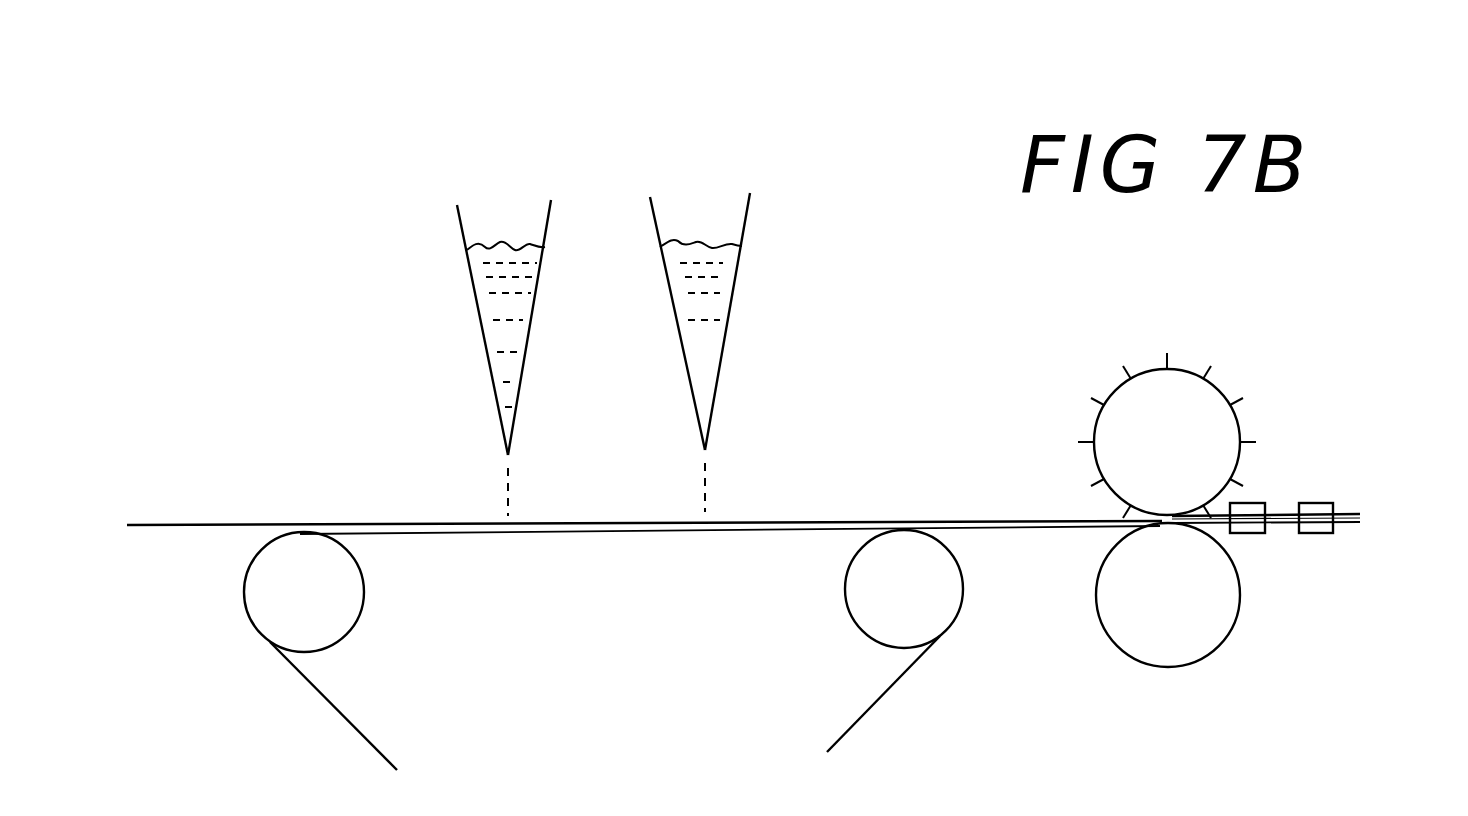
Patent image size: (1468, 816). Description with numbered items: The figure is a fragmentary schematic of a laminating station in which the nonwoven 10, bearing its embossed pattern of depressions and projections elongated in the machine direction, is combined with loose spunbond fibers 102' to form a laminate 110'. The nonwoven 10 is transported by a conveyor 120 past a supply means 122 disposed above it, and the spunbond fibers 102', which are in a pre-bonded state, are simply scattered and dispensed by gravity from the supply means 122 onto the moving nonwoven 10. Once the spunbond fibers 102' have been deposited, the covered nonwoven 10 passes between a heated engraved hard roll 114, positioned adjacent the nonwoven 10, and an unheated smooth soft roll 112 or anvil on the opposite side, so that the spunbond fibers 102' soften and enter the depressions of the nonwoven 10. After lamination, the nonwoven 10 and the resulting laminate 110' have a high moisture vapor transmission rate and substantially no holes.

The nonwoven 10 is at (217, 524).
The spunbond fibers 102' is at (838, 398).
The laminate 110' is at (1267, 586).
The unheated smooth soft roll 112 is at (1128, 620).
The heated engraved hard roll 114 is at (1137, 430).
The conveyor 120 is at (470, 533).
The supply means 122 is at (455, 223).